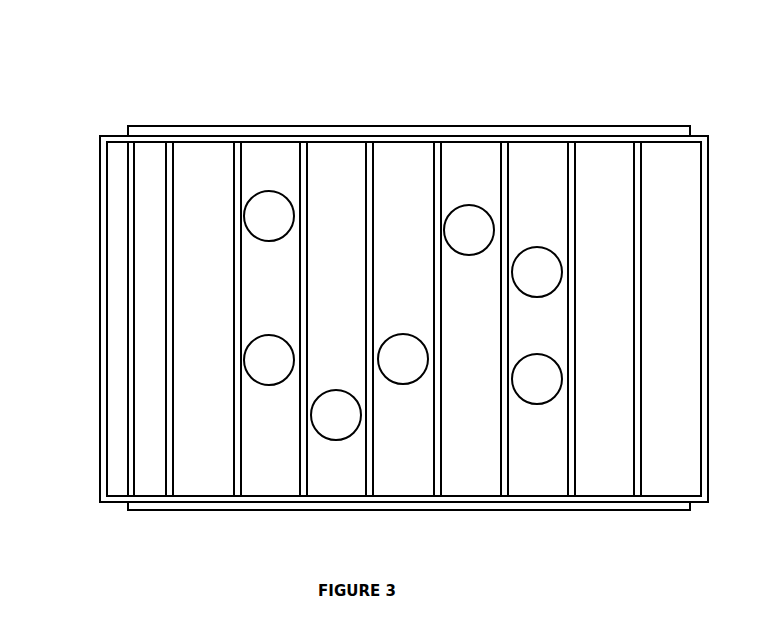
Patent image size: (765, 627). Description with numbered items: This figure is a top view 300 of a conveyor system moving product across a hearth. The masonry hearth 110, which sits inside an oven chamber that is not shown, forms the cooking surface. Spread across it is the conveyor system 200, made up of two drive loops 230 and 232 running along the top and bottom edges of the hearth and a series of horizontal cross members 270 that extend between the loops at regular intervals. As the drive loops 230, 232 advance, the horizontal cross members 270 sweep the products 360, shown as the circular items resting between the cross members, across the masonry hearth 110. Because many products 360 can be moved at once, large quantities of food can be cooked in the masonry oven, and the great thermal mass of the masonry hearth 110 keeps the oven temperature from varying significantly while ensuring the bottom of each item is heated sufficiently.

The wall panel assembly 300 is at (100, 58).
The masonry hearth 110 is at (128, 512).
The conveyor system 200 is at (90, 134).
The drive loop 230 is at (100, 139).
The drive loop 232 is at (102, 499).
The horizontal cross members 270 is at (170, 144).
The products 360 is at (403, 315).